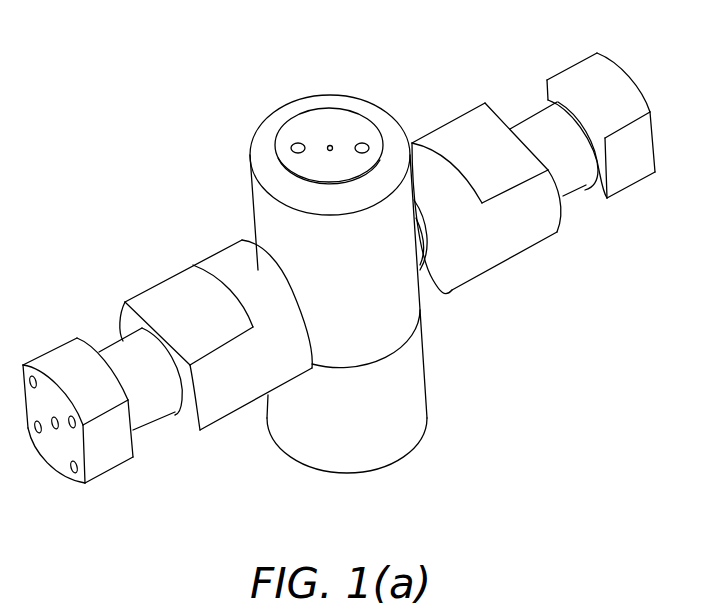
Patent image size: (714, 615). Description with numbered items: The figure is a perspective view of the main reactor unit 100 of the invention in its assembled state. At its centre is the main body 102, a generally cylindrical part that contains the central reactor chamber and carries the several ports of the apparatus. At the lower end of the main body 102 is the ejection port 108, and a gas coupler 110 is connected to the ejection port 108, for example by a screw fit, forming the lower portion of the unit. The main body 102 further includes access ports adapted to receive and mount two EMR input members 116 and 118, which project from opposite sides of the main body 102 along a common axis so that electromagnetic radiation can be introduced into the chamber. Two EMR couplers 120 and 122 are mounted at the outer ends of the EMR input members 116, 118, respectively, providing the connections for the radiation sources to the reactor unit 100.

The main reactor unit 100 is at (140, 130).
The main body 102 is at (264, 137).
The ejection port 108 is at (363, 482).
The gas coupler 110 is at (422, 387).
The EMR input member 116 is at (466, 123).
The EMR input member 118 is at (167, 293).
The EMR coupler 120 is at (581, 72).
The EMR coupler 122 is at (58, 354).